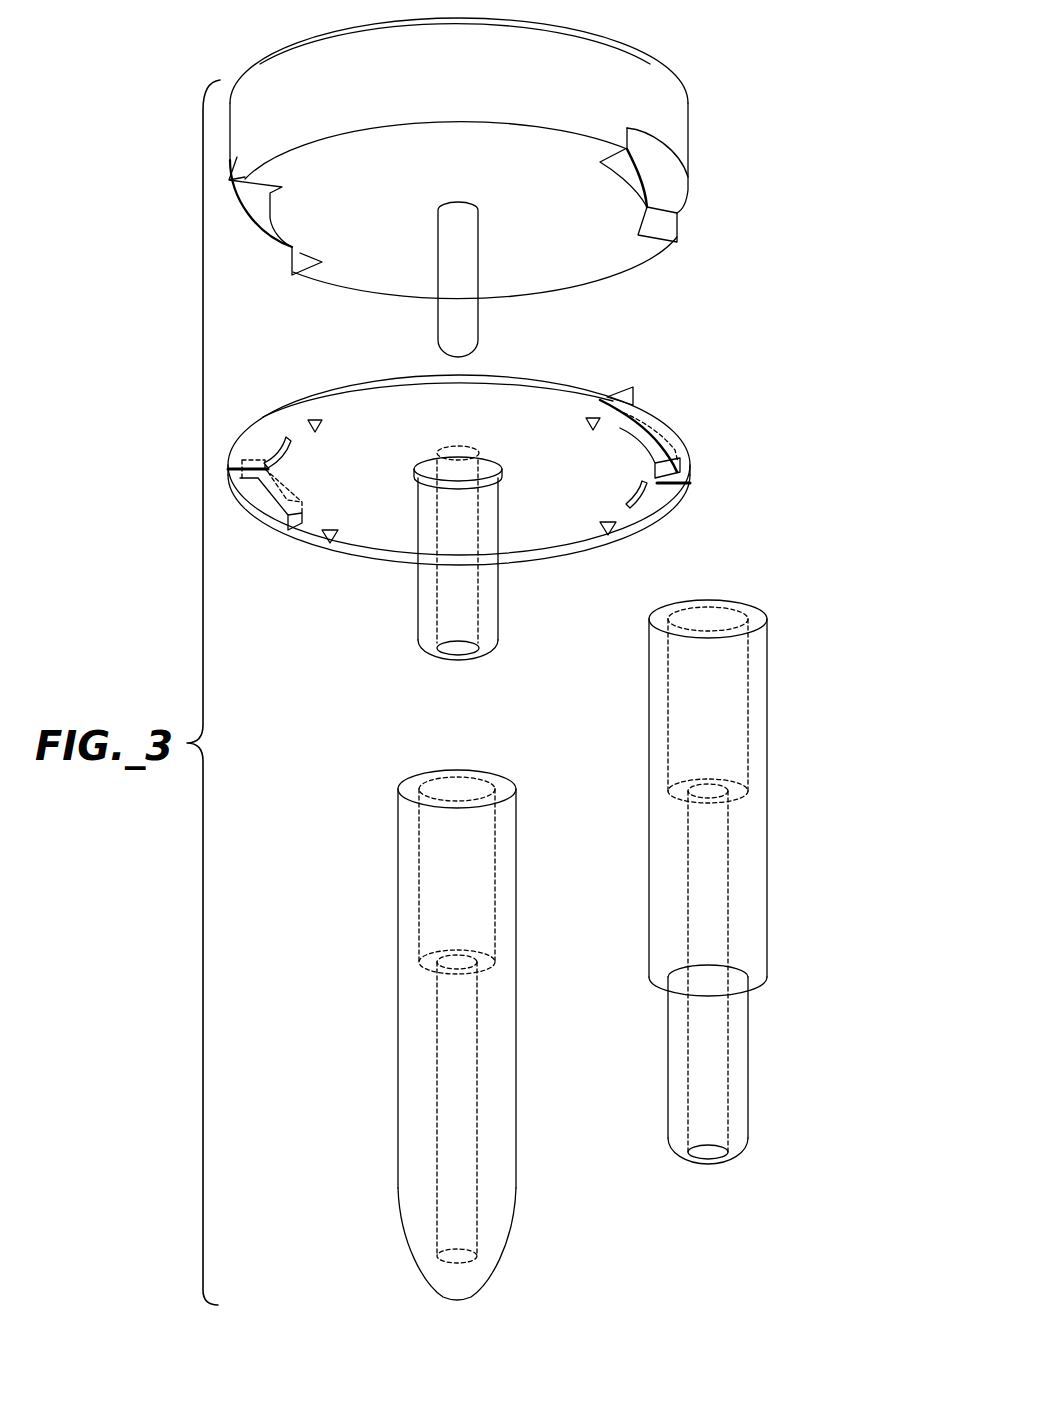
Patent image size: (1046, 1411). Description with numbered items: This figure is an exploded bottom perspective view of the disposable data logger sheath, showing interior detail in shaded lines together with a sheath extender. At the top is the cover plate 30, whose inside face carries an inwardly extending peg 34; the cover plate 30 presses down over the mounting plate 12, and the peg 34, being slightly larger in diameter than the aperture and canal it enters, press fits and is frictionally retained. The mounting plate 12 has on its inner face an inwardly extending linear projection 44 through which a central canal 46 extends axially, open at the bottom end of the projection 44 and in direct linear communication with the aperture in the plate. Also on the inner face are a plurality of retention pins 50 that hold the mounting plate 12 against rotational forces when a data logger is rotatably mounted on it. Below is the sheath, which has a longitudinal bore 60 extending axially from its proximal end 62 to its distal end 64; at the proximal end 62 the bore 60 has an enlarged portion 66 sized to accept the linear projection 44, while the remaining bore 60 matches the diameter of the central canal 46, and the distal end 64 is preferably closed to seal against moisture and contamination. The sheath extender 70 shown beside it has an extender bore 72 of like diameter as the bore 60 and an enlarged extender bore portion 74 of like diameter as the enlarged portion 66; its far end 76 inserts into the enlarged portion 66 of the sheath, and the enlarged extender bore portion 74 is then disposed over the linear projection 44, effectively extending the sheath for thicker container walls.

The cover plate 30 is at (651, 60).
The peg 34 is at (480, 322).
The mounting plate 12 is at (653, 523).
The retention pins 50 is at (315, 420).
The linear projection 44 is at (418, 597).
The central canal 46 is at (465, 580).
The proximal end 62 is at (397, 850).
The enlarged portion 66 is at (485, 869).
The longitudinal bore 60 is at (468, 1043).
The distal end 64 is at (516, 1217).
The sheath extender 70 is at (767, 780).
The enlarged extender bore portion 74 is at (717, 698).
The extender bore 72 is at (712, 929).
The far end 76 is at (749, 1053).